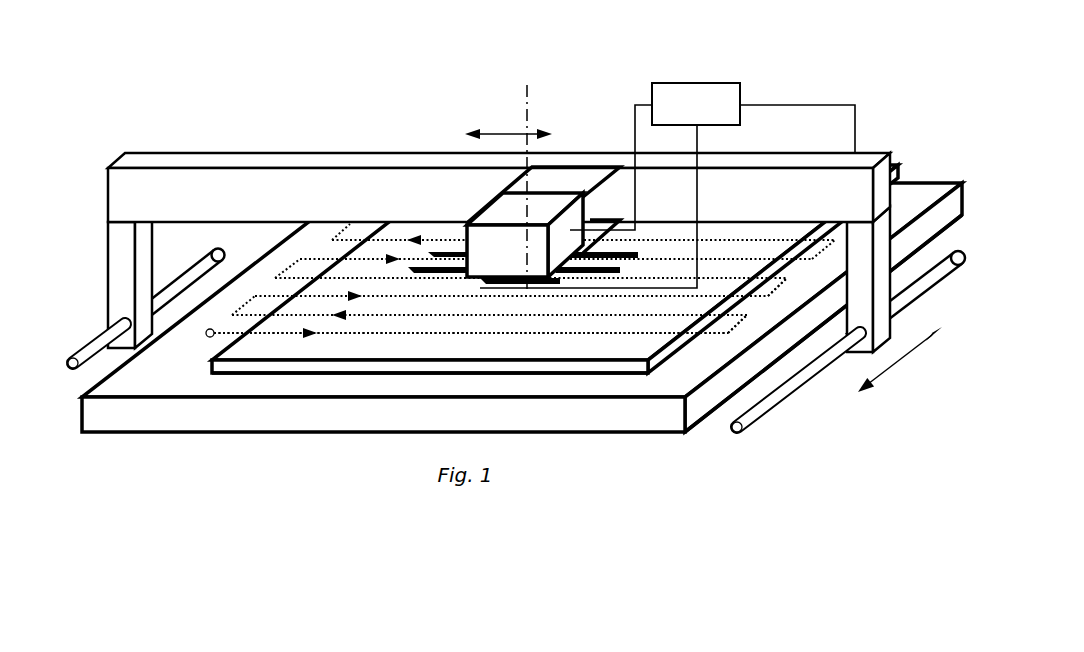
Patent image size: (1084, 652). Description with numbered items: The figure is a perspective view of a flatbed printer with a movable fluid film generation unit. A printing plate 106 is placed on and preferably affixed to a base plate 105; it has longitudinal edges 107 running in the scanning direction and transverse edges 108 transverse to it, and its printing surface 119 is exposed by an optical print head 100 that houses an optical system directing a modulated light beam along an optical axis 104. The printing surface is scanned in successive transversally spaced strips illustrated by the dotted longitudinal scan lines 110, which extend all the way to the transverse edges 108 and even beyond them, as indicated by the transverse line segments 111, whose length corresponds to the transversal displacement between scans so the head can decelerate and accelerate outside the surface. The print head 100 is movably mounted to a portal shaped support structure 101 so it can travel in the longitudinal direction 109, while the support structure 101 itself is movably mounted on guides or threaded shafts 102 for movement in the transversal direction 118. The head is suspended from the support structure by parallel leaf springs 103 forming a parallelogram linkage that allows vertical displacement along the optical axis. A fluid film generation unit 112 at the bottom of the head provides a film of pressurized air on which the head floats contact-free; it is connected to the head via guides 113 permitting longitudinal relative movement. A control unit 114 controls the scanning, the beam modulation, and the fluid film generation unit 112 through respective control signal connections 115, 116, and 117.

The optical print head 100 is at (457, 171).
The portal shaped support structure 101 is at (499, 144).
The guides or threaded shafts 102 is at (516, 329).
The parallel leaf springs 103 is at (602, 220).
The optical axis 104 is at (467, 170).
The base plate 105 is at (522, 332).
The printing plate 106 is at (488, 341).
The longitudinal edges 107 is at (373, 464).
The transverse edges 108 is at (823, 365).
The longitudinal direction 109 is at (496, 117).
The longitudinal scan lines 110 is at (502, 444).
The transversal displacement 111 is at (829, 351).
The fluid film generation unit 112 is at (579, 419).
The guides 113 is at (458, 263).
The control unit 114 is at (719, 82).
The control signal connection 115 is at (803, 109).
The control signal connection 116 is at (606, 116).
The control signal connection 117 is at (652, 201).
The transversal direction 118 is at (911, 362).
The printing surface 119 is at (273, 250).